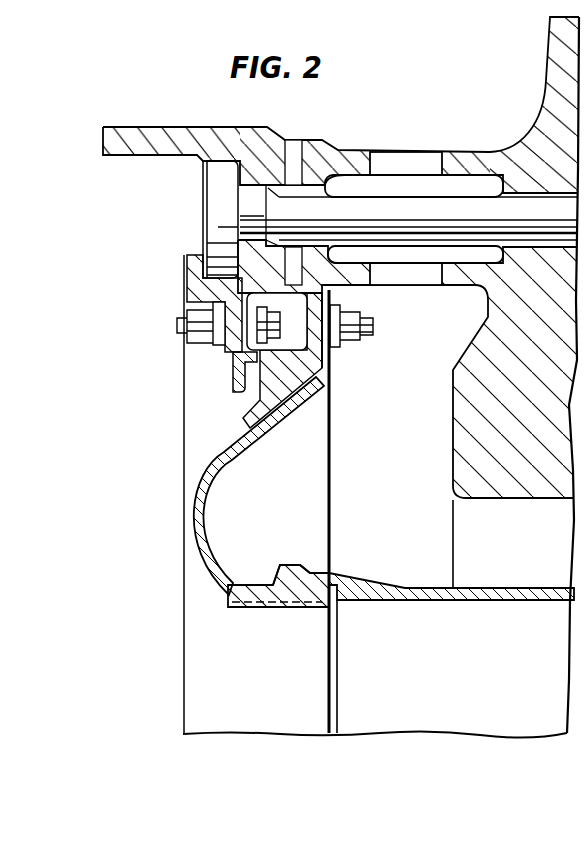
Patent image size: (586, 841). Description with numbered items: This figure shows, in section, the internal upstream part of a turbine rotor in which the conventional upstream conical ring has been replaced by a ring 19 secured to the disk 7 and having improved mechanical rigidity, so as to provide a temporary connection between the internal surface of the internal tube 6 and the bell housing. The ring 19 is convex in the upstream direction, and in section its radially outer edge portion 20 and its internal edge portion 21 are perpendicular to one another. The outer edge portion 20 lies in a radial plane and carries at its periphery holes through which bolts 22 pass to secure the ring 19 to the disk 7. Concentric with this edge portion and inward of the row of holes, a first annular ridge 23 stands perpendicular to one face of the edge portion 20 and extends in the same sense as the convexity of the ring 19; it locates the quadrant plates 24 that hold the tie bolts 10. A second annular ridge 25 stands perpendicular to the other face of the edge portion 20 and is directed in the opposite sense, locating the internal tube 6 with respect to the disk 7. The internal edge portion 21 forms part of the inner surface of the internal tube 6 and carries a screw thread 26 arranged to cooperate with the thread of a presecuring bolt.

The internal tube 6 is at (417, 605).
The disk 7 is at (473, 432).
The tie bolts 10 is at (420, 204).
The ring 19 is at (183, 513).
The radially outer edge portion 20 is at (314, 372).
The internal edge portion 21 is at (228, 583).
The bolts 22 is at (342, 322).
The first annular ridge 23 is at (250, 374).
The quadrant plates 24 is at (225, 360).
The second annular ridge 25 is at (326, 368).
The screw thread 26 is at (283, 608).